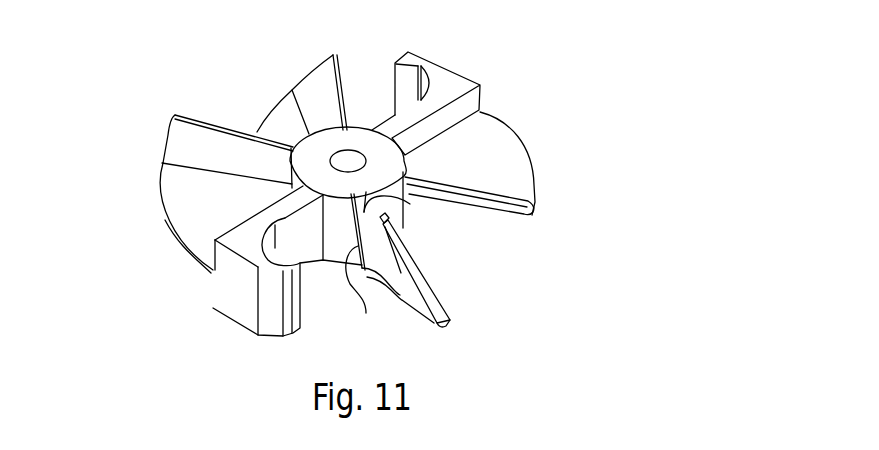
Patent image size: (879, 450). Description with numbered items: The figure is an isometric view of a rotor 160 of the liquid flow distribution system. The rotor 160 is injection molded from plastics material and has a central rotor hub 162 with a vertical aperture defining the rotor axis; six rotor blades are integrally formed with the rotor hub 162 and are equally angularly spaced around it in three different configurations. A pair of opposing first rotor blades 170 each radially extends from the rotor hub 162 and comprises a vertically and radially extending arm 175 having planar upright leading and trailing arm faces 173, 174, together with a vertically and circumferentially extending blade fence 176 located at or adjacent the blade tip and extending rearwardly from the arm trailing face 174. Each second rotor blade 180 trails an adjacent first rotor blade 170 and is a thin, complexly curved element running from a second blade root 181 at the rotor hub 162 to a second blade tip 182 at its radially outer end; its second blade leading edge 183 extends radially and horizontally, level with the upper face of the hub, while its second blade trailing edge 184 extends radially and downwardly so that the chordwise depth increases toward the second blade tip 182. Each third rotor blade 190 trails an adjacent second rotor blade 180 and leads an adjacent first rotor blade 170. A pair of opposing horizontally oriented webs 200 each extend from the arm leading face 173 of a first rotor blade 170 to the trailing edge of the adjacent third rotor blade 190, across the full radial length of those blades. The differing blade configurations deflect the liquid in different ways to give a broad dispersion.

The rotor 160 is at (123, 55).
The rotor hub 162 is at (357, 138).
The first rotor blade 170 is at (198, 303).
The arm leading face 173 is at (462, 103).
The arm trailing face 174 is at (310, 257).
The arm 175 is at (255, 221).
The blade fence 176 is at (247, 308).
The second rotor blade 180 is at (387, 313).
The second blade root 181 is at (410, 204).
The second blade tip 182 is at (442, 328).
The second blade leading edge 183 is at (366, 313).
The second blade trailing edge 184 is at (430, 275).
The third rotor blade 190 is at (157, 146).
The web 200 is at (164, 217).